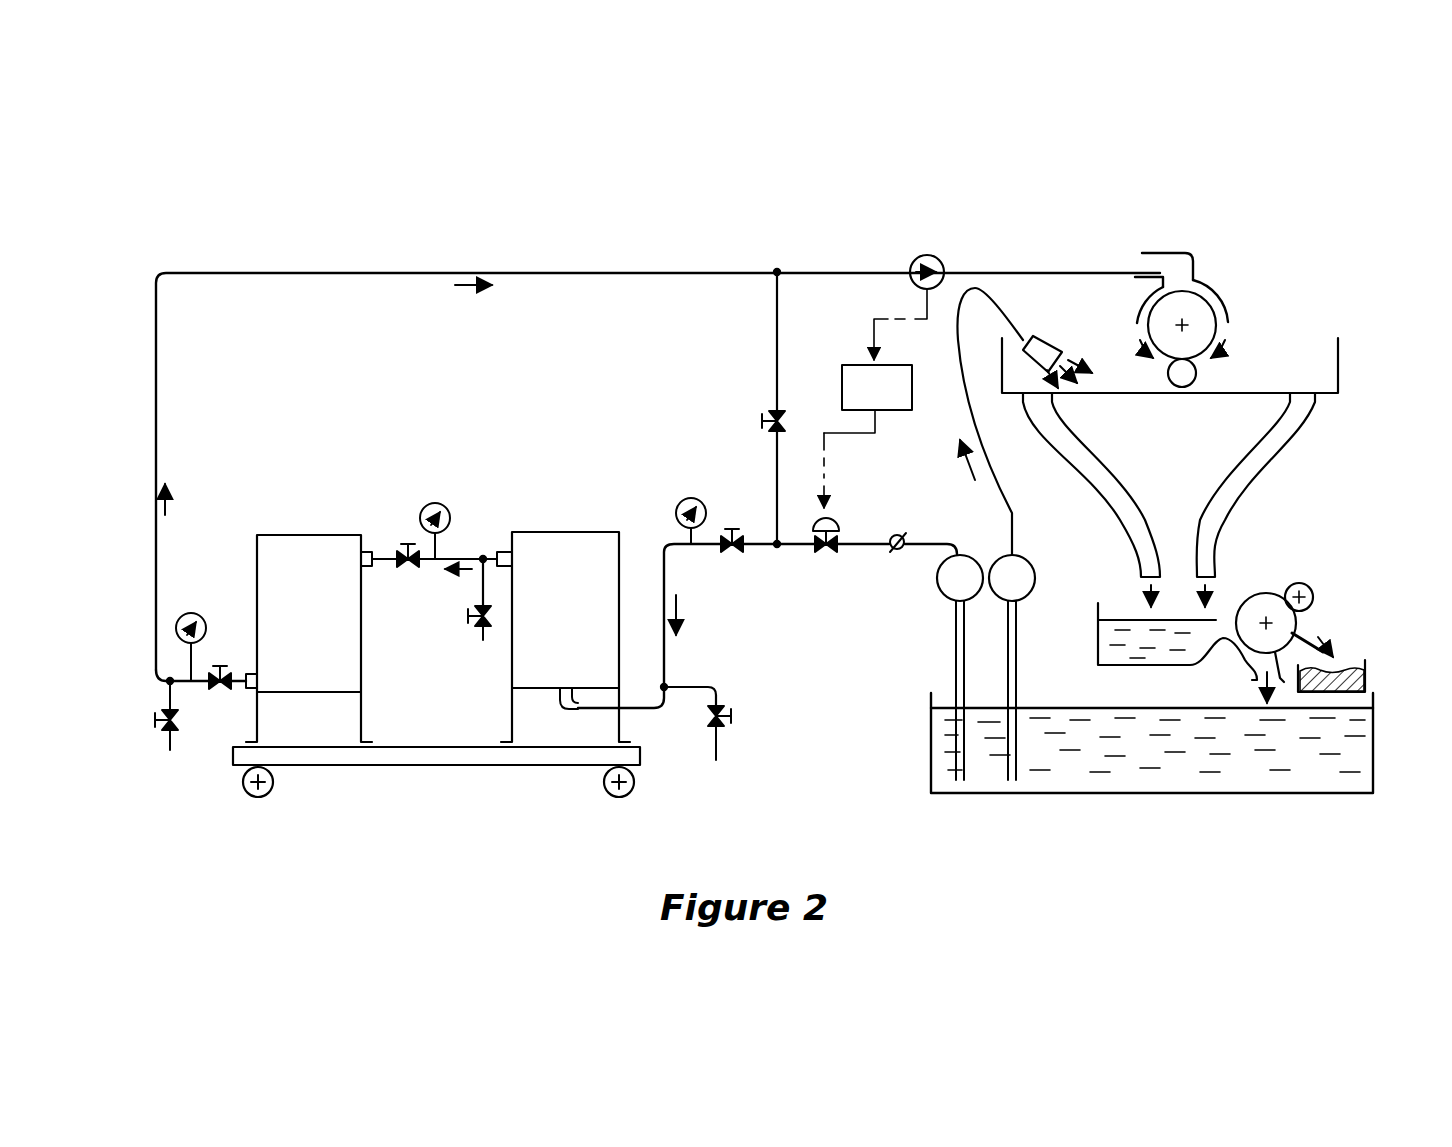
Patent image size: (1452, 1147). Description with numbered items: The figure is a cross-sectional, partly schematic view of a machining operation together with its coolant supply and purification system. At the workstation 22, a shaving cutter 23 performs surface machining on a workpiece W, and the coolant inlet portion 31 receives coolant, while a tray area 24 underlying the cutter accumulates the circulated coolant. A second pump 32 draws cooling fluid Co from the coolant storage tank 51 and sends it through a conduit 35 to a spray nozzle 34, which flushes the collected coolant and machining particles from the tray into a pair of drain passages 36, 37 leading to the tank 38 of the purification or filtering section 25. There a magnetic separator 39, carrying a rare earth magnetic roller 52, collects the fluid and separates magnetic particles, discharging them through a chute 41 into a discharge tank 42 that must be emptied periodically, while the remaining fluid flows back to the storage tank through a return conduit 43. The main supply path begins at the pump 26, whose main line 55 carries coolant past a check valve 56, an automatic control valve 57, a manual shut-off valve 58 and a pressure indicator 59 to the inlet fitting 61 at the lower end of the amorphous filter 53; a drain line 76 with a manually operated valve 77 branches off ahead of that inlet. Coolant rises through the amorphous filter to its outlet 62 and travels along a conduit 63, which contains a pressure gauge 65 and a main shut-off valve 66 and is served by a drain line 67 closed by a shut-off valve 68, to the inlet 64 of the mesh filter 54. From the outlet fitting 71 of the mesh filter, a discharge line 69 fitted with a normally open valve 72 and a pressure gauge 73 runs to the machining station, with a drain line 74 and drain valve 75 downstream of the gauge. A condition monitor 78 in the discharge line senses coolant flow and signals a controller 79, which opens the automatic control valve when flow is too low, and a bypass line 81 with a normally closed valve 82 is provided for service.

The workstation 22 is at (1232, 287).
The shaving cutter 23 is at (1225, 330).
The tray area 24 is at (1130, 396).
The purification or filtering section 25 is at (1345, 568).
The pump 26 is at (943, 600).
The coolant inlet portion 31 is at (1163, 253).
The second pump 32 is at (1037, 582).
The spray nozzle 34 is at (1050, 342).
The conduit 35 is at (1010, 478).
The drain passage 36 is at (1112, 493).
The drain passage 37 is at (1252, 470).
The tank 38 is at (1132, 667).
The magnetic separator 39 is at (1275, 594).
The chute 41 is at (1310, 635).
The discharge tank 42 is at (1368, 670).
The return conduit 43 is at (1256, 672).
The coolant storage tank 51 is at (1100, 795).
The rare earth magnetic roller 52 is at (1258, 594).
The amorphous filter 53 is at (575, 532).
The mesh filter 54 is at (312, 535).
The main line 55 is at (865, 555).
The check valve 56 is at (905, 533).
The automatic control valve 57 is at (830, 512).
The manual shut-off valve 58 is at (735, 555).
The pressure indicator 59 is at (692, 497).
The inlet fitting 61 is at (558, 715).
The outlet 62 is at (505, 550).
The conduit 63 is at (465, 556).
The inlet 64 is at (370, 550).
The pressure gauge 65 is at (438, 503).
The main shut-off valve 66 is at (408, 570).
The drain line 67 is at (480, 590).
The shut-off valve 68 is at (478, 632).
The discharge line 69 is at (414, 265).
The outlet fitting 71 is at (258, 678).
The normally open valve 72 is at (222, 690).
The pressure gauge 73 is at (195, 612).
The drain line 74 is at (158, 677).
The drain valve 75 is at (168, 733).
The drain line 76 is at (712, 686).
The valve 77 is at (730, 705).
The condition monitor 78 is at (935, 256).
The controller 79 is at (900, 411).
The bypass line 81 is at (780, 340).
The normally closed valve 82 is at (788, 420).
The workpiece W is at (1197, 375).
The cooling fluid Co is at (1225, 775).